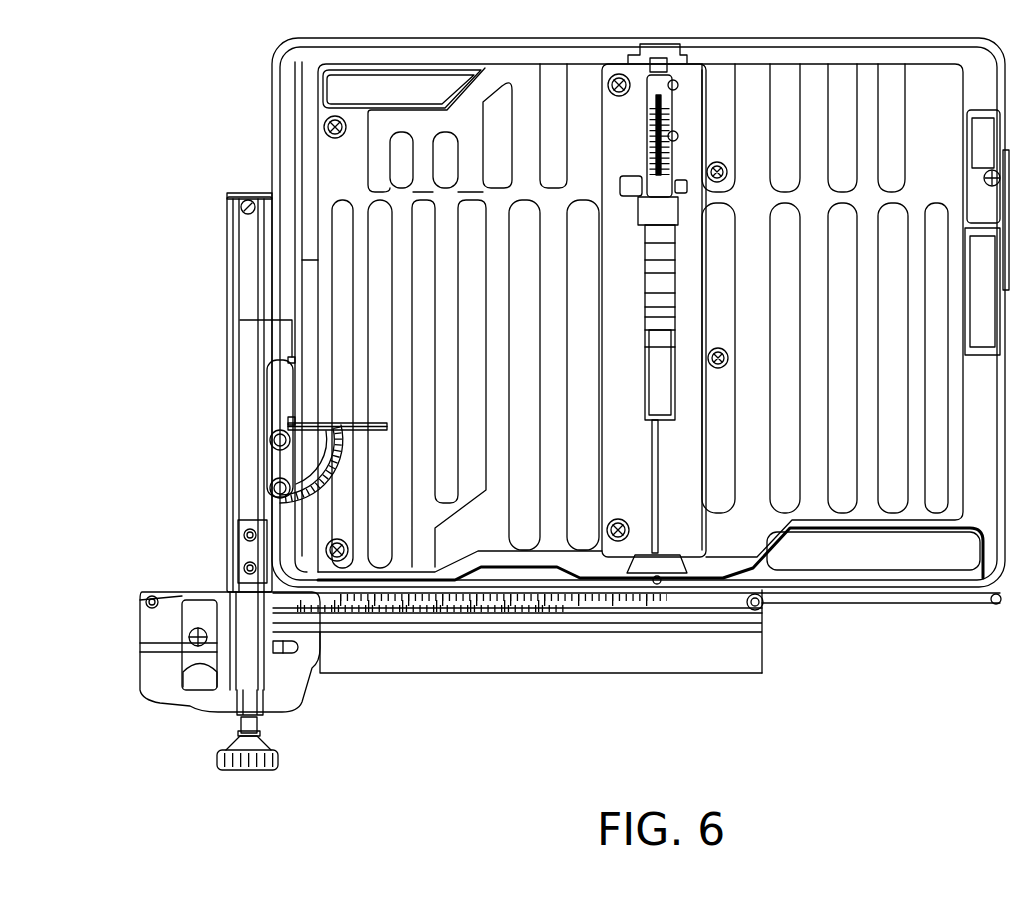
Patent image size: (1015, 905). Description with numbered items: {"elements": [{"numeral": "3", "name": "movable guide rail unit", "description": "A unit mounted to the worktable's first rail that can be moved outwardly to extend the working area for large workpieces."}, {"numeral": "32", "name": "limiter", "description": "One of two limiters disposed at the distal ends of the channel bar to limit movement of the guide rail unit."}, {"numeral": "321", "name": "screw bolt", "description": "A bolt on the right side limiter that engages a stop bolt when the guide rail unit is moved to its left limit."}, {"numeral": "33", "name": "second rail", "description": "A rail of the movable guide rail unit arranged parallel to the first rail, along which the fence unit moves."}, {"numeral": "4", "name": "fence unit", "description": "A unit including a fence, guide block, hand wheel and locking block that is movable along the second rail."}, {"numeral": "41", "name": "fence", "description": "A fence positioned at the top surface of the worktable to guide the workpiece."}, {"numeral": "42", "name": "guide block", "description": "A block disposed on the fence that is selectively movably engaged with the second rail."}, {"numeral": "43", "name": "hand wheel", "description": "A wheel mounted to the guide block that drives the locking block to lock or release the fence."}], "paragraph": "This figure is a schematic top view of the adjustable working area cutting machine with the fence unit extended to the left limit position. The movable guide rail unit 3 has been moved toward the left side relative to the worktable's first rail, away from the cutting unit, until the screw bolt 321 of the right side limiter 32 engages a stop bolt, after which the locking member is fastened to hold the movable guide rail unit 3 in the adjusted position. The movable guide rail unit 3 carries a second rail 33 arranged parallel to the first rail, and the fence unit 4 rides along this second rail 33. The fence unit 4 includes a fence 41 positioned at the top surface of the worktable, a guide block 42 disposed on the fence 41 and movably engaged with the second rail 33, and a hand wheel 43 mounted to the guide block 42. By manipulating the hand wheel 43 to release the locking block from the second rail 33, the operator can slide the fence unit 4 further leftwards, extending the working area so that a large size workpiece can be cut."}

The base assembly 3 is at (595, 634).
The sliding rail 32 is at (735, 625).
The positioning knob 321 is at (755, 616).
The base plate 33 is at (650, 655).
The fence assembly 4 is at (172, 735).
The guide bar 41 is at (247, 552).
The slide seat 42 is at (288, 660).
The locking knob 43 is at (250, 770).